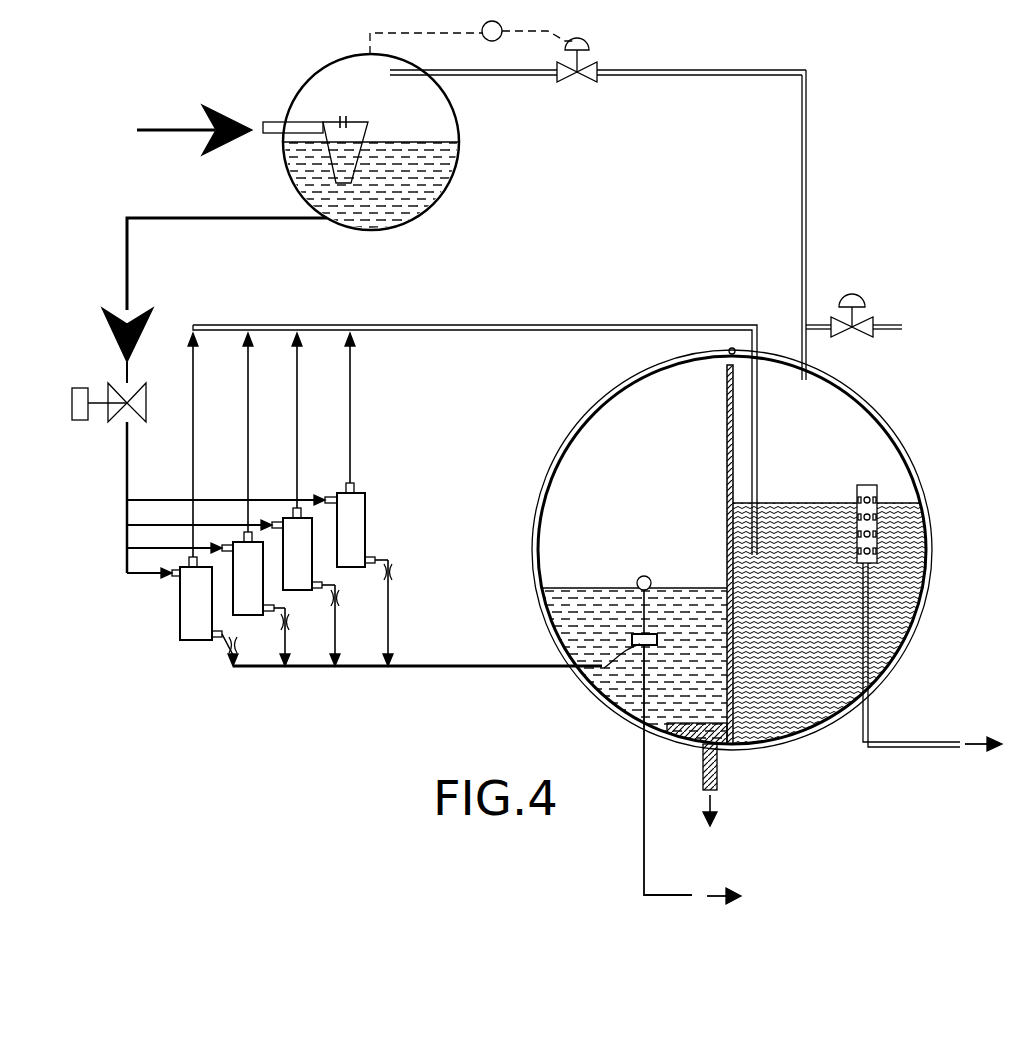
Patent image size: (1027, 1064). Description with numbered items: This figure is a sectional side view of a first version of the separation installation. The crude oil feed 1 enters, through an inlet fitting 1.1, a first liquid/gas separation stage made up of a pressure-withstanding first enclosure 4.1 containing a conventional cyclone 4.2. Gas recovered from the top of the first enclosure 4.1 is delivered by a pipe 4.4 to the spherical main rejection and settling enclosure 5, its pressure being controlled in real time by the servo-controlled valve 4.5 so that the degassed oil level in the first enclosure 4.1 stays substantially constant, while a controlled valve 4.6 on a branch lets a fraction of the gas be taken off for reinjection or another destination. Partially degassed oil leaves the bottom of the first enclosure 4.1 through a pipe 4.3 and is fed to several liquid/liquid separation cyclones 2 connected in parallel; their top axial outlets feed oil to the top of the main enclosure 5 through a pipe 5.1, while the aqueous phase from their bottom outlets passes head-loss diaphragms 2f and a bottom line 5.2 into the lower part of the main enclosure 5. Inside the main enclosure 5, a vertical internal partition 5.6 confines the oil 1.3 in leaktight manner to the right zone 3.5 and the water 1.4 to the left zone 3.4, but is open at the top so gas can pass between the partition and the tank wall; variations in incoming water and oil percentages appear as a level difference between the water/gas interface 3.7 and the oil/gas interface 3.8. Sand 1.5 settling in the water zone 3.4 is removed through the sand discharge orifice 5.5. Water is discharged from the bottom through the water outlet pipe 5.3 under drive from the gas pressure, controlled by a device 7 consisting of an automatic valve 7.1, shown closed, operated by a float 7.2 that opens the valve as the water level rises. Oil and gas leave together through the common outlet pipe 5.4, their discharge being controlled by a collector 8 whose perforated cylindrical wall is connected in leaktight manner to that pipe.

The raw gas inlet 1 is at (178, 126).
The pressure reducing valve 1.1 is at (120, 350).
The oil 1.3 is at (352, 410).
The water 1.4 is at (392, 624).
The solids deposit 1.5 is at (684, 742).
The cyclones 2 is at (307, 532).
The head-loss means 2f is at (398, 572).
The water zone 3.4 is at (572, 624).
The oil zone 3.5 is at (898, 608).
The water/gas interface 3.7 is at (585, 587).
The oil/gas interface 3.8 is at (798, 503).
The first enclosure 4.1 is at (306, 80).
The conventional cyclone 4.2 is at (369, 122).
The pipe 4.3 is at (127, 270).
The pipe 4.4 is at (806, 181).
The servo-controlled valve 4.5 is at (577, 84).
The controlled valve 4.6 is at (851, 300).
The main enclosure 5 is at (593, 415).
The pipe 5.1 is at (497, 325).
The liquid line 5.2 is at (481, 668).
The water outlet pipe 5.3 is at (644, 845).
The common outlet pipe 5.4 is at (901, 747).
The sand discharge orifice 5.5 is at (719, 770).
The internal partition 5.6 is at (727, 490).
The water discharge control device 7 is at (641, 570).
The automatic valve 7.1 is at (589, 675).
The float 7.2 is at (652, 578).
The collector 8 is at (862, 485).